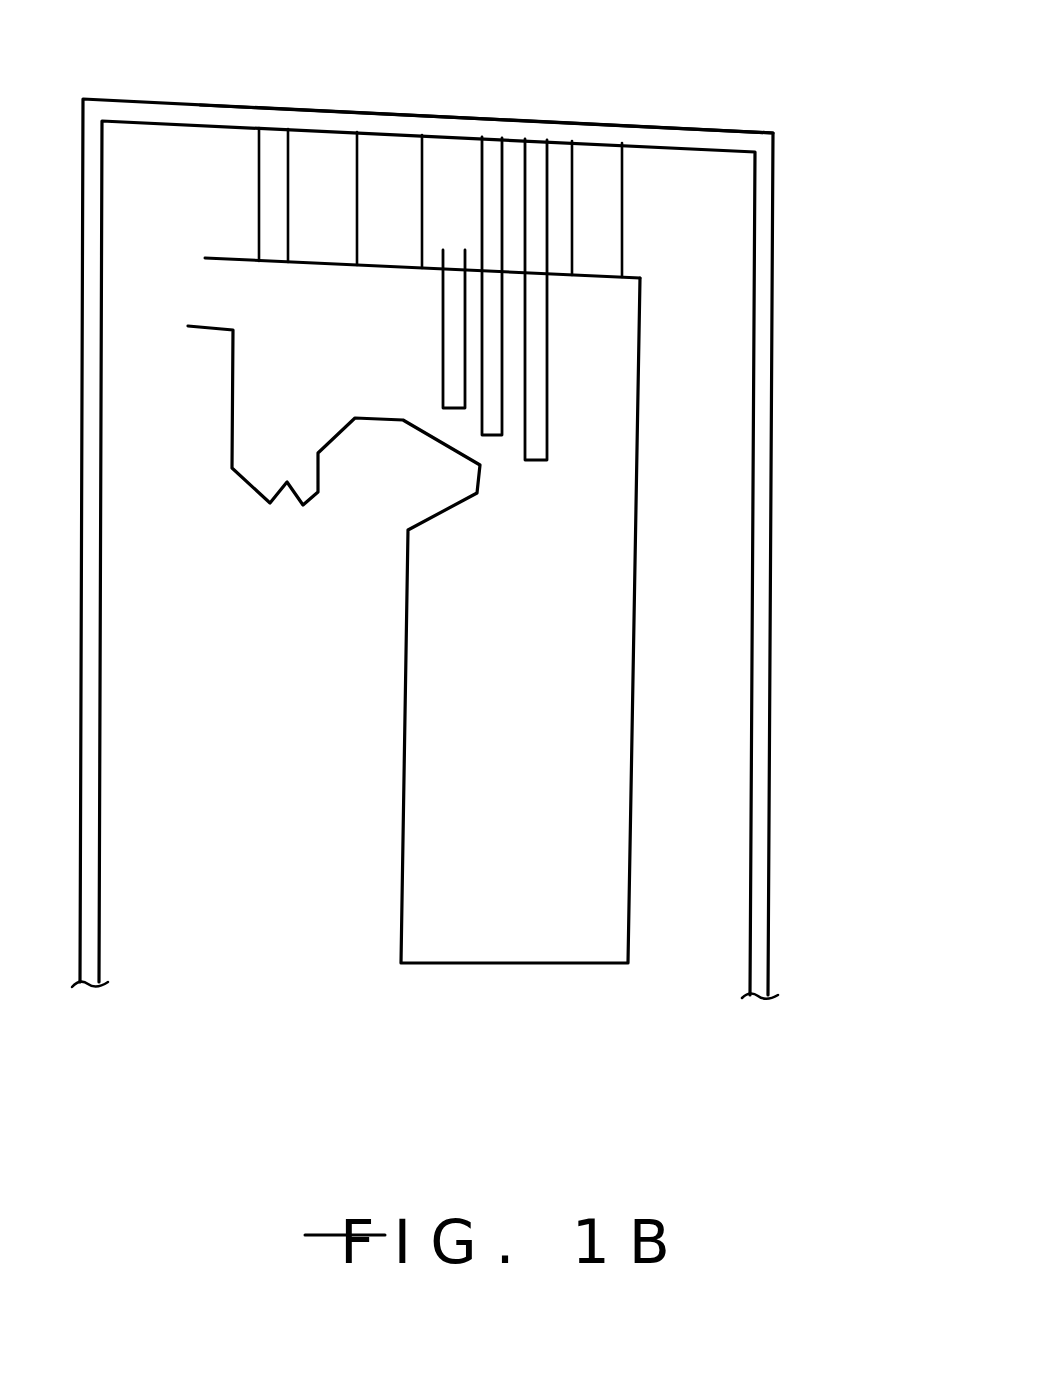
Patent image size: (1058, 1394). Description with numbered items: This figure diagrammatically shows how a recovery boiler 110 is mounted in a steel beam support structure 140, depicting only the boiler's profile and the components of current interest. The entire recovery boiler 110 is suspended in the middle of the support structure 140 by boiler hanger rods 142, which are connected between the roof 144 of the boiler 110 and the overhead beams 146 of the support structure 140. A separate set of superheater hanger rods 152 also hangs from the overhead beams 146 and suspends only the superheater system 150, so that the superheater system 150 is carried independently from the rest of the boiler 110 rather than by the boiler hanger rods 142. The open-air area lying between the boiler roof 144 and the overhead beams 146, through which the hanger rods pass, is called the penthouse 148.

The recovery boiler 110 is at (640, 385).
The steel beam support structure 140 is at (780, 551).
The boiler hanger rods 142 is at (352, 172).
The roof 144 is at (583, 272).
The overhead beams 146 is at (712, 138).
The penthouse 148 is at (720, 190).
The superheater system 150 is at (548, 393).
The superheater hanger rods 152 is at (484, 150).